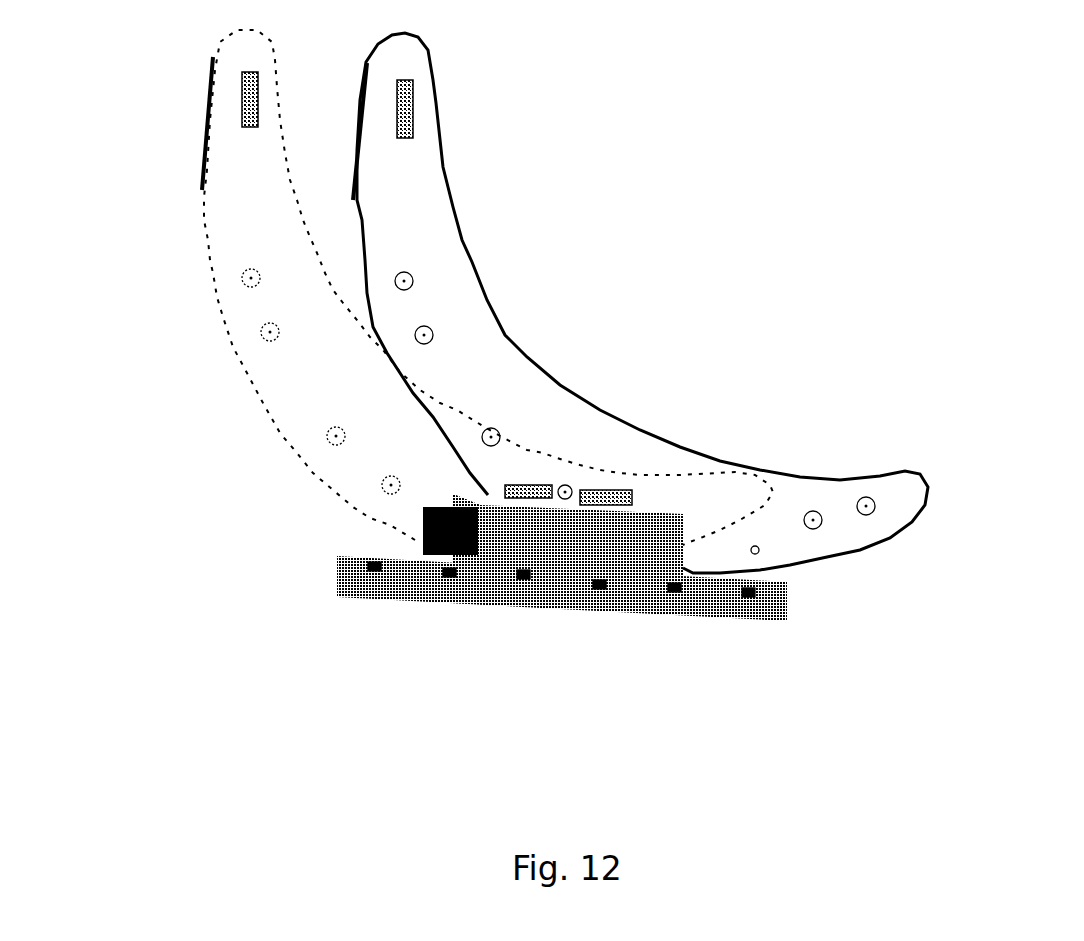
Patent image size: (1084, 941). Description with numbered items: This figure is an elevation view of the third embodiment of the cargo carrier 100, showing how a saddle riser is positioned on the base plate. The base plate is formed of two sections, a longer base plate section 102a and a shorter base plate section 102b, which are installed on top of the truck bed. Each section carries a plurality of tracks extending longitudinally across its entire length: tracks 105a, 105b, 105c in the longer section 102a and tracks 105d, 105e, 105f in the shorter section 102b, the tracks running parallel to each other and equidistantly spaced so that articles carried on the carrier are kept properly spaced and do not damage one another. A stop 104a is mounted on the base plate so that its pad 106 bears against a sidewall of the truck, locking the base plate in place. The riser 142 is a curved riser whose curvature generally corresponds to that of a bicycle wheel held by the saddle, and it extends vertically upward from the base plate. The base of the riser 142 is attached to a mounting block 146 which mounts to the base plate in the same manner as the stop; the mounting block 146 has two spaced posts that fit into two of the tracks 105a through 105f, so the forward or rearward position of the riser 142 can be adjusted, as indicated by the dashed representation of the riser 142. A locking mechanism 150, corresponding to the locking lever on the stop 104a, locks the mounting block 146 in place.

The cargo carrier 100 is at (572, 260).
The riser 142 is at (247, 220).
The mounting block 146 is at (633, 543).
The locking mechanism 150 is at (530, 487).
The stop 104a is at (430, 507).
The pad 106 is at (425, 530).
The base plate section 102a is at (337, 577).
The base plate section 102b is at (780, 608).
The track 105a is at (375, 572).
The track 105b is at (450, 577).
The track 105c is at (523, 580).
The track 105d is at (600, 587).
The track 105e is at (675, 592).
The track 105f is at (749, 597).